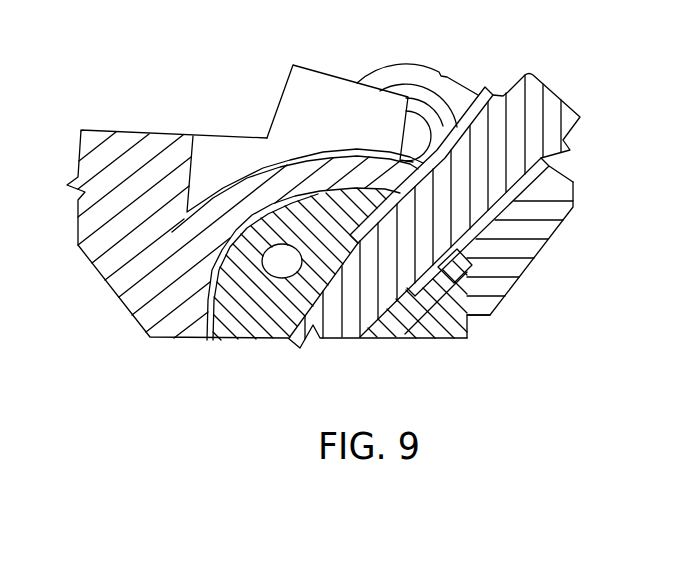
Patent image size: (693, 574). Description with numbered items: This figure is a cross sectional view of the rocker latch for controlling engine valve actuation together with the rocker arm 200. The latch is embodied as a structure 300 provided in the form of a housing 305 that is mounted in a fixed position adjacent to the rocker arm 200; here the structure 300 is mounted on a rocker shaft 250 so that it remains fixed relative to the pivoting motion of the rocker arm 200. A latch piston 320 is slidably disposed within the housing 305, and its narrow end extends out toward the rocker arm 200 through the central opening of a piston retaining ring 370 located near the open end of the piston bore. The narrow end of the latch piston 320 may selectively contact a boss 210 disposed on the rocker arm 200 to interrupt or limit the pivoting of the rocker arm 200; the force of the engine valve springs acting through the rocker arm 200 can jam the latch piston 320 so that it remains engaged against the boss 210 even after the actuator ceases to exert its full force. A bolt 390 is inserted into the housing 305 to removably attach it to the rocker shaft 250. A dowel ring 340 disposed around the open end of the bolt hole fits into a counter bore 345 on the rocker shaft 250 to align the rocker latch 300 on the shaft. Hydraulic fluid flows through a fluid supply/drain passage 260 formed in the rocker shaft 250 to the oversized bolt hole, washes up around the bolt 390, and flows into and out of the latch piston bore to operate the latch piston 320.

The rocker arm 200 is at (120, 114).
The boss 210 is at (323, 82).
The piston retaining ring 370 is at (414, 88).
The latch piston 320 is at (417, 125).
The bolt 390 is at (560, 99).
The housing 305 is at (572, 180).
The structure (rocker latch) 300 is at (554, 242).
The dowel ring 340 is at (462, 278).
The counter bore 345 is at (427, 293).
The fluid supply/drain passage 260 is at (281, 263).
The rocker shaft 250 is at (228, 322).